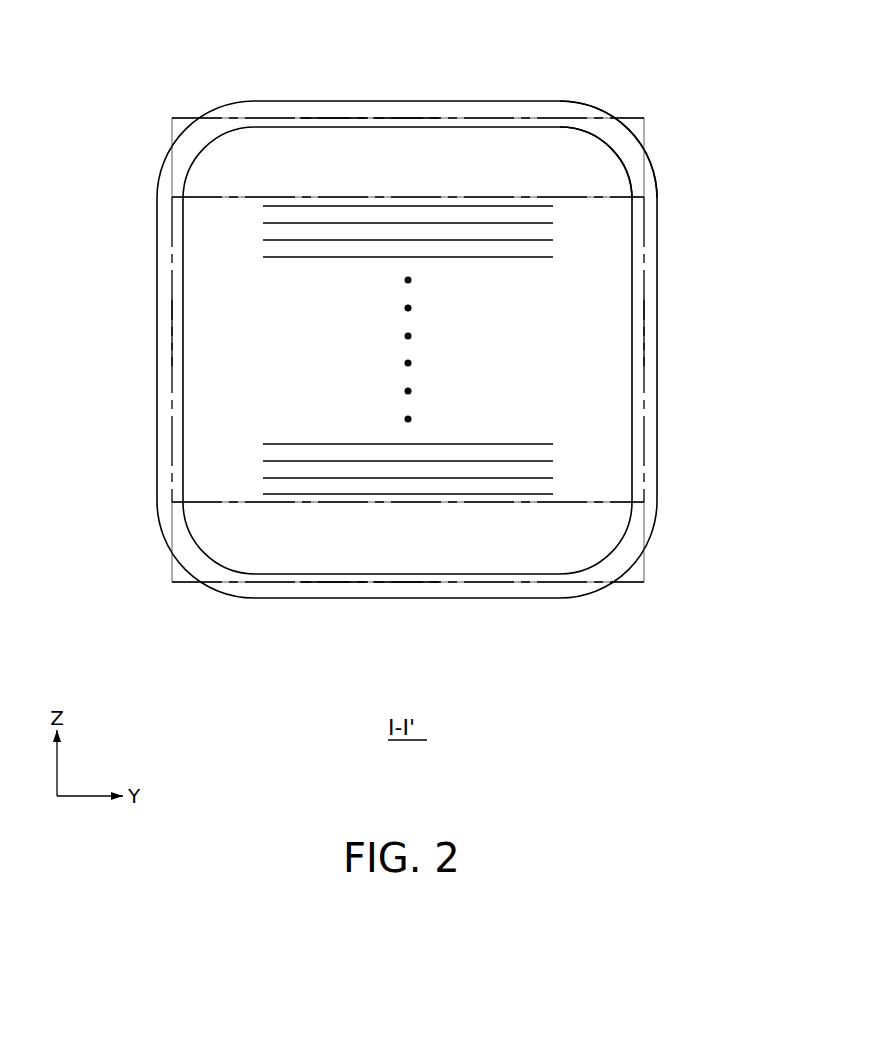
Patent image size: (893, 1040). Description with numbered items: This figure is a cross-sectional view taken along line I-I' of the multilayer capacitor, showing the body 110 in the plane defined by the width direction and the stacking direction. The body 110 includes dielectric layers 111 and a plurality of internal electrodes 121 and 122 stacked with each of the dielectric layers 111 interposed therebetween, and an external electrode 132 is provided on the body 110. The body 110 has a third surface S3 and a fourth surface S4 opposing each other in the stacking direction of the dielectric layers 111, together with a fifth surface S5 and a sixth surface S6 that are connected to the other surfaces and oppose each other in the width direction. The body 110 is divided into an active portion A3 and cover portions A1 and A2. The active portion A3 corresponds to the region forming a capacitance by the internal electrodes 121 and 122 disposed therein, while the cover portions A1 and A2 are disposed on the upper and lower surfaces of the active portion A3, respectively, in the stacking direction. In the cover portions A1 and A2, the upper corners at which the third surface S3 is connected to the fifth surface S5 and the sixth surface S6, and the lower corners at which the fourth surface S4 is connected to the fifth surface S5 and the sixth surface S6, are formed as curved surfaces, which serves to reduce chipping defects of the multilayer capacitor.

The body 110 is at (292, 123).
The dielectric layers 111 is at (533, 453).
The internal electrode 121 is at (443, 206).
The internal electrode 122 is at (513, 223).
The external electrode 132 is at (609, 130).
The cover portion A1 is at (645, 137).
The cover portion A2 is at (645, 563).
The active portion A3 is at (645, 248).
The third surface S3 is at (372, 124).
The fourth surface S4 is at (372, 575).
The fifth surface S5 is at (183, 334).
The sixth surface S6 is at (633, 334).